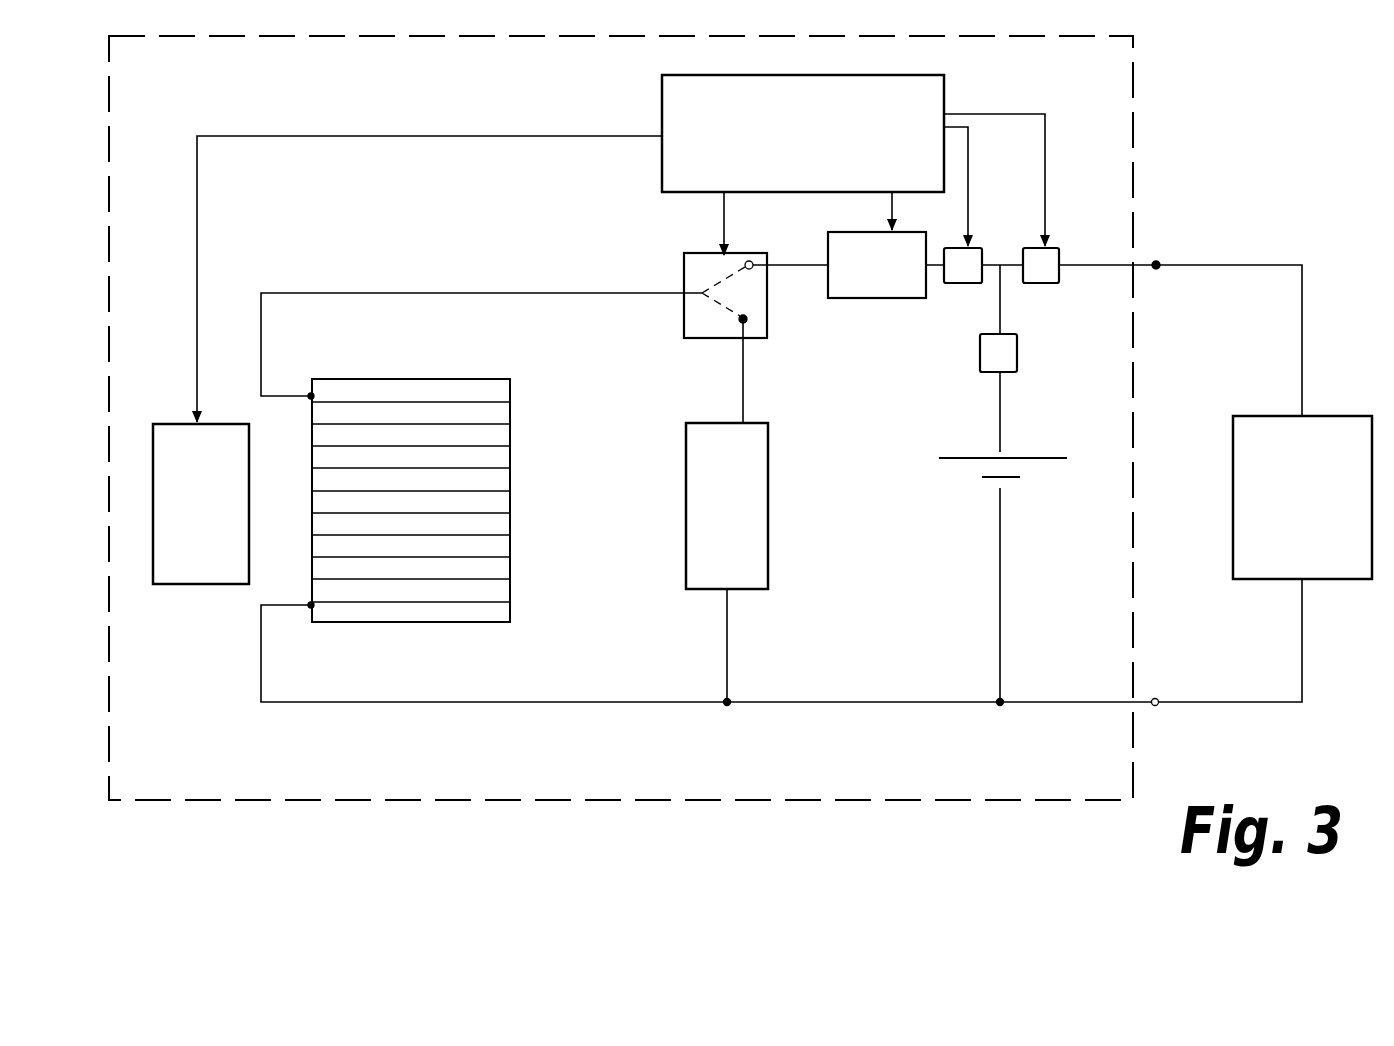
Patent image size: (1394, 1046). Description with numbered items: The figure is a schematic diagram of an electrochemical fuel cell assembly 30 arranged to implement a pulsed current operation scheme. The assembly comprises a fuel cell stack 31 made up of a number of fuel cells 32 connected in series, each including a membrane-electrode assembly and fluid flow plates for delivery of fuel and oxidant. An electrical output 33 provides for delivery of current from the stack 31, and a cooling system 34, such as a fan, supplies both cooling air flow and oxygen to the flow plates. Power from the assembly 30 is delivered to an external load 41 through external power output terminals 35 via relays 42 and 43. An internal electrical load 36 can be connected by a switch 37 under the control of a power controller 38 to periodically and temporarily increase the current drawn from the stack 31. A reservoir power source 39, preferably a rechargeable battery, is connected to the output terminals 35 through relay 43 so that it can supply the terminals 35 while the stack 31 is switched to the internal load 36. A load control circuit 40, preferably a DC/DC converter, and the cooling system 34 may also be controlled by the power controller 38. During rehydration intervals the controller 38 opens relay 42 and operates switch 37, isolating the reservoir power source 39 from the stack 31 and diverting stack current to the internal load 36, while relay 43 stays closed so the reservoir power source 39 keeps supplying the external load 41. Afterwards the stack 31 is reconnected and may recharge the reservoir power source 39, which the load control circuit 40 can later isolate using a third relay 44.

The electrochemical fuel cell assembly 30 is at (817, 802).
The fuel cell stack 31 is at (512, 588).
The fuel cells 32 is at (503, 480).
The electrical output 33 is at (310, 396).
The cooling system 34 is at (195, 570).
The external power output terminals 35 is at (1157, 262).
The internal electrical load 36 is at (759, 542).
The switch 37 is at (758, 308).
The power controller 38 is at (930, 97).
The reservoir power source 39 is at (1037, 456).
The load control circuit 40 is at (847, 238).
The external load 41 is at (1335, 563).
The relay 42 is at (963, 276).
The relay 43 is at (1050, 276).
The third relay 44 is at (1008, 355).